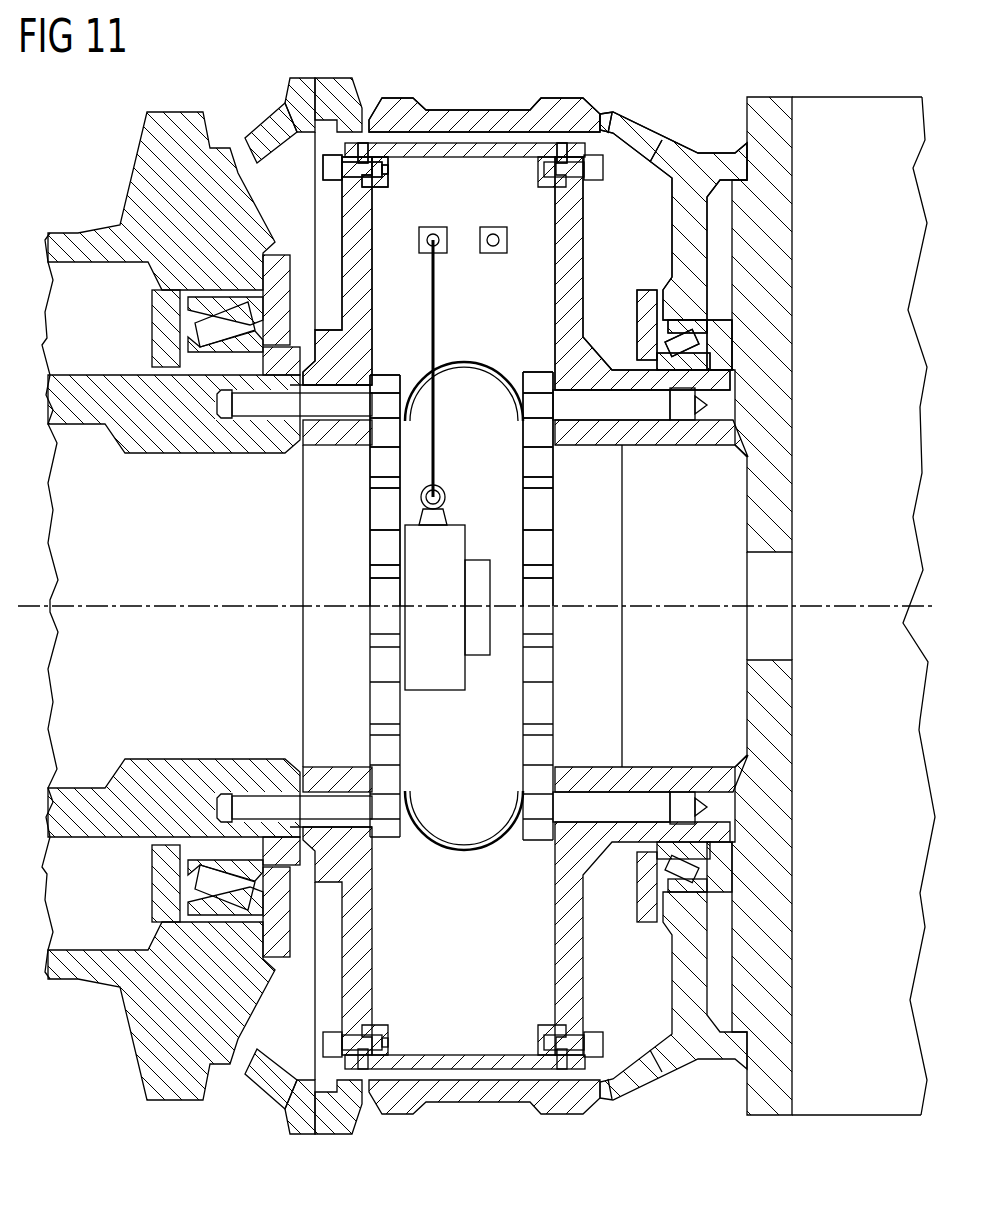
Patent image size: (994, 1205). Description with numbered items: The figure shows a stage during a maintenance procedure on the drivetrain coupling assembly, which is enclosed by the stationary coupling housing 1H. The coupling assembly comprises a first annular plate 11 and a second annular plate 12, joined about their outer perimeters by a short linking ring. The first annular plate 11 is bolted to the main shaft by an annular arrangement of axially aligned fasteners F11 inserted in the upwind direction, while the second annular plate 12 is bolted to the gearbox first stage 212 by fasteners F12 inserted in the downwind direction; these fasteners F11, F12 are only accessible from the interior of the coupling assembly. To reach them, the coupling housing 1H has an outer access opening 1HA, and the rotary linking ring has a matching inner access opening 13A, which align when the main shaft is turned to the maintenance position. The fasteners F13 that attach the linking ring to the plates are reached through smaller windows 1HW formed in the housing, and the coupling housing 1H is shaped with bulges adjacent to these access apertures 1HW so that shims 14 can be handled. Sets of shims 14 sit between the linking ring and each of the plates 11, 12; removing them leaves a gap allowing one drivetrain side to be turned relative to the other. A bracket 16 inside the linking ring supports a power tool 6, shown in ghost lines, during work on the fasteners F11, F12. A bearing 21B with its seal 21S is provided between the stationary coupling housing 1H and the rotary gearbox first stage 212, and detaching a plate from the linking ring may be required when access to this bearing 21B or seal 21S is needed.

The shims 14 is at (364, 142).
The access aperture 1HW is at (637, 134).
The fasteners F13 is at (325, 170).
The bracket 16 is at (493, 227).
The second annular plate 12 is at (571, 216).
The seal 21S is at (637, 357).
The first annular plate 11 is at (362, 278).
The bearing 21B is at (688, 346).
The inner access opening 13A is at (465, 372).
The fasteners F11 is at (388, 507).
The fasteners F12 is at (548, 600).
The power tool 6 is at (433, 680).
The outer access opening 1HA is at (463, 852).
The gearbox first stage 212 is at (775, 838).
The coupling housing 1H is at (463, 1088).